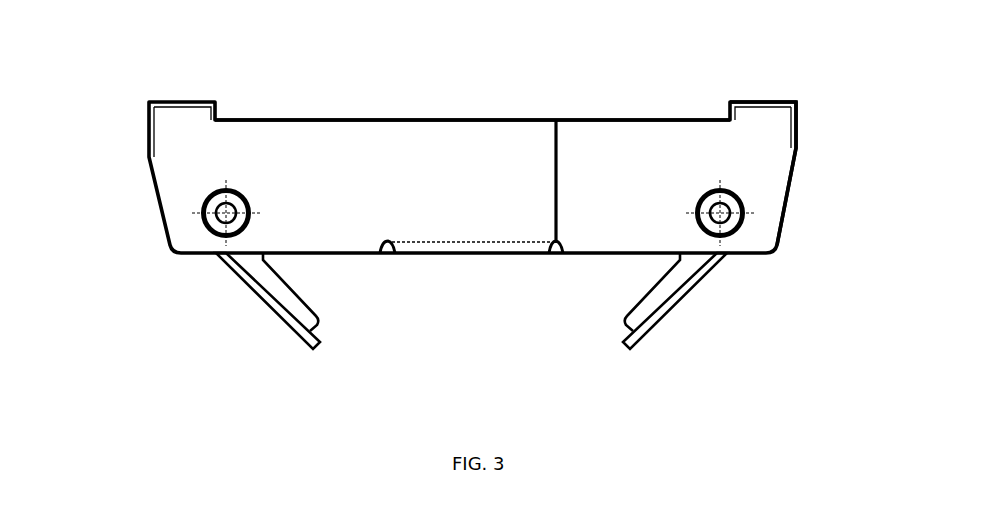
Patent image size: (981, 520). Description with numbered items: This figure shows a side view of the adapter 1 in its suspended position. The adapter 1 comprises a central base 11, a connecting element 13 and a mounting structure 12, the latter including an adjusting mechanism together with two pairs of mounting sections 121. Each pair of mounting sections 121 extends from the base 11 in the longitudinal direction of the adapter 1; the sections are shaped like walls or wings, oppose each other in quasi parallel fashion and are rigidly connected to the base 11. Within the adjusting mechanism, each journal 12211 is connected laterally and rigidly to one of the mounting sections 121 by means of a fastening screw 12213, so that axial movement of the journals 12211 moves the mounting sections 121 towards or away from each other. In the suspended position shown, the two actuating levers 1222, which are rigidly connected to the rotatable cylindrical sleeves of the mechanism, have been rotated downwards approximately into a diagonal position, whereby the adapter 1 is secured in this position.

The adapter 1 is at (143, 243).
The central base 11 is at (435, 110).
The mounting structure 12 is at (701, 100).
The mounting section 121 is at (221, 168).
The journal 12211 is at (752, 228).
The fastening screw 12213 is at (730, 202).
The actuating lever 1222 is at (267, 308).
The connecting element 13 is at (467, 270).